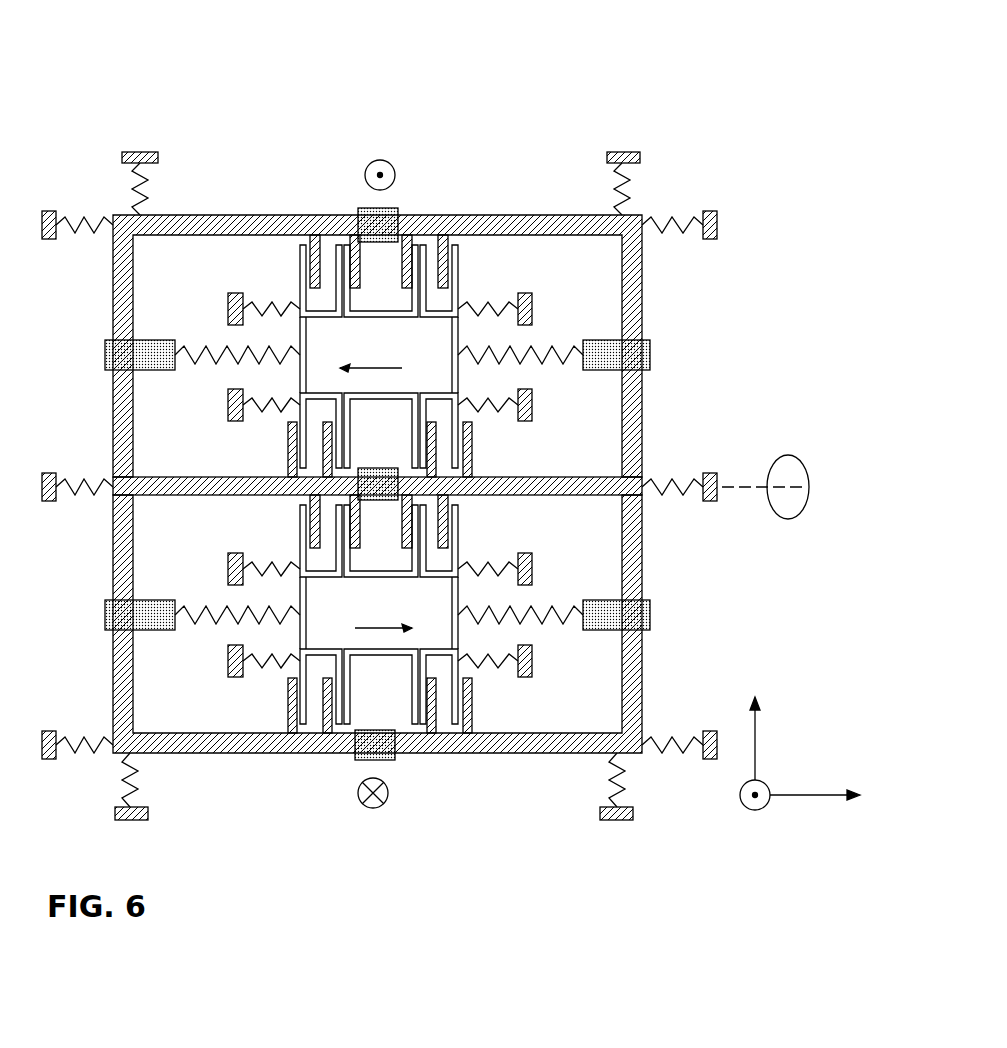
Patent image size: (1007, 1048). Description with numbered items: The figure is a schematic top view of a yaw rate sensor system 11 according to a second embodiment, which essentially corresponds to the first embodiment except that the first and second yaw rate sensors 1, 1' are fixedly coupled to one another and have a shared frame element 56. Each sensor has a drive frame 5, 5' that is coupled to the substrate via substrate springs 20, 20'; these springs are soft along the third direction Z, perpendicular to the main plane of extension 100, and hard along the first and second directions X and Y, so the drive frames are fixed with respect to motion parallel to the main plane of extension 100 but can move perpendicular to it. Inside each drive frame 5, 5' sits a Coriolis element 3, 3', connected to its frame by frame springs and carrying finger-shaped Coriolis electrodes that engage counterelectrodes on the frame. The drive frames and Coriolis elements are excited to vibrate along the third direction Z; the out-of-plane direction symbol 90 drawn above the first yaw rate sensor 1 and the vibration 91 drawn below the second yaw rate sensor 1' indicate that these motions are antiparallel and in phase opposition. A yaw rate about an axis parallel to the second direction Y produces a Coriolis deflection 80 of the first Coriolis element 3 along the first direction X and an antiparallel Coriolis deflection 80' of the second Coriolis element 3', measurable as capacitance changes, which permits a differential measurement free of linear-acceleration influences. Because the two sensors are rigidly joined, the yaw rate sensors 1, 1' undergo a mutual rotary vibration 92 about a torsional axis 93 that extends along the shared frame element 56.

The yaw rate sensor system 11 is at (705, 100).
The first yaw rate sensor 1 is at (429, 301).
The second yaw rate sensor 1' is at (430, 662).
The drive frame 5 is at (377, 301).
The drive frame 5' is at (377, 673).
The shared frame element 56 is at (562, 470).
The Coriolis element 3 is at (327, 356).
The Coriolis element 3' is at (325, 614).
The Coriolis deflection 80 is at (371, 413).
The Coriolis deflection 80' is at (383, 674).
The substrate springs 20 is at (379, 187).
The substrate springs 20' is at (423, 657).
The out-of-plane direction symbol (toward viewer) 90 is at (379, 160).
The vibration 91 is at (378, 808).
The rotary vibration 92 is at (800, 456).
The torsional axis 93 is at (740, 487).
The main plane of extension 100 is at (835, 757).